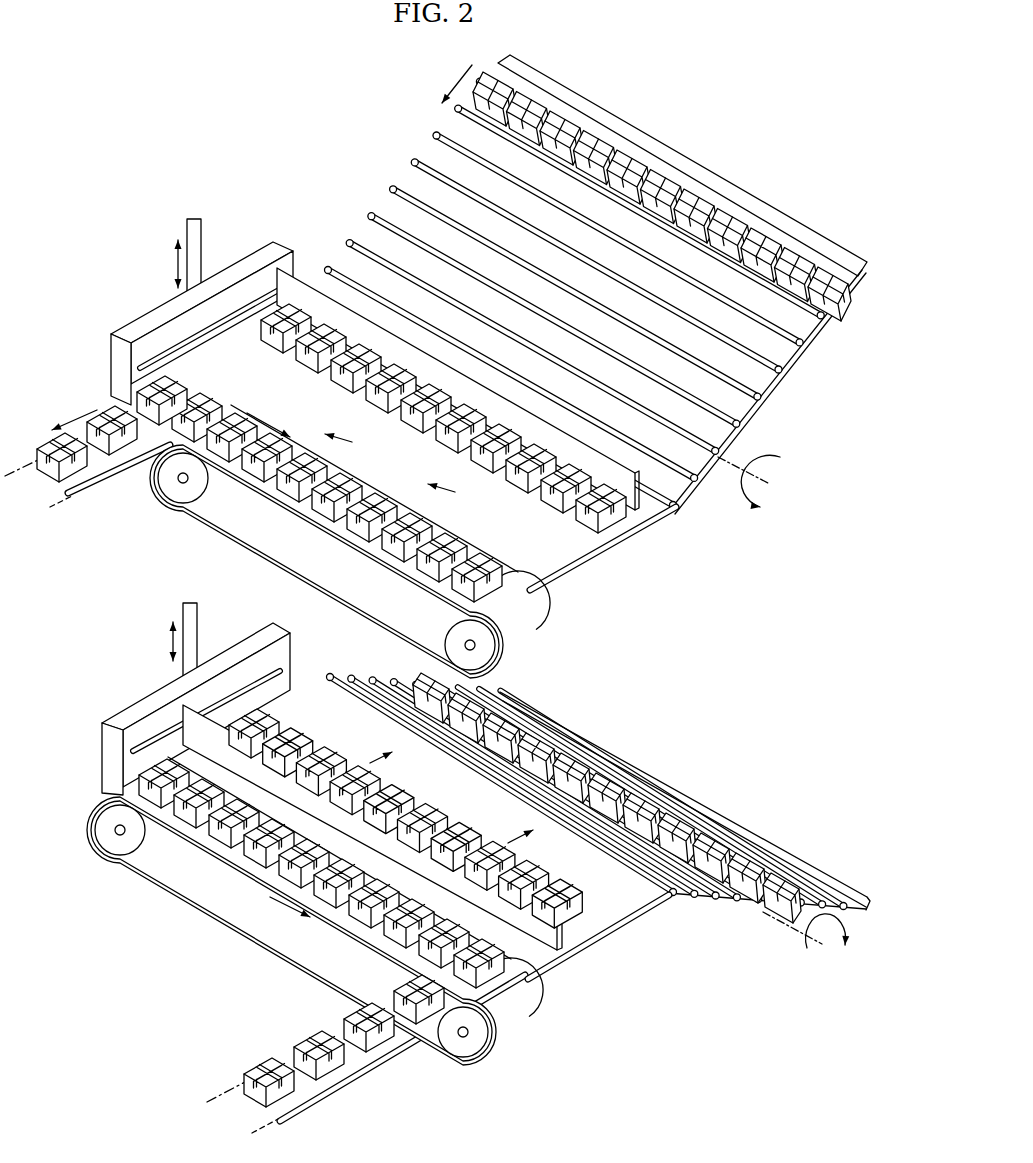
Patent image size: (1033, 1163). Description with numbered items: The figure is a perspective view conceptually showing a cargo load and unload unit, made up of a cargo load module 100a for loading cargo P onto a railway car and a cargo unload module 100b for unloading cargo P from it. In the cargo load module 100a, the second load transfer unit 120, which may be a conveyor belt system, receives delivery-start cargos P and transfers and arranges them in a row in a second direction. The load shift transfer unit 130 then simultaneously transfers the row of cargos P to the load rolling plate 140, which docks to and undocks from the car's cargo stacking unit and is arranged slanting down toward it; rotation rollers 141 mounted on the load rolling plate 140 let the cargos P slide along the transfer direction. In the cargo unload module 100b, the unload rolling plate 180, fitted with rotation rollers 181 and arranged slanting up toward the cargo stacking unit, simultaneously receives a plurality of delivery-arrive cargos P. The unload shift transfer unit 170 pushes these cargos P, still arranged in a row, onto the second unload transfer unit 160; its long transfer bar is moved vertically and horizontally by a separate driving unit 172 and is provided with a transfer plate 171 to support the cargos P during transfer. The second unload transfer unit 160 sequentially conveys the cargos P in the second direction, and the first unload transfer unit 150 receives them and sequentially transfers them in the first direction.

The cargo load module 100a is at (478, 847).
The cargo unload module 100b is at (586, 284).
The second load transfer unit 120 is at (515, 1020).
The load shift transfer unit 130 is at (543, 933).
The load rolling plate 140 is at (599, 826).
The rotation rollers 141 is at (728, 903).
The first unload transfer unit 150 is at (77, 492).
The second unload transfer unit 160 is at (527, 640).
The unload shift transfer unit 170 is at (300, 296).
The transfer plate 171 is at (555, 562).
The driving unit 172 is at (147, 320).
The unload rolling plate 180 is at (413, 176).
The rotation rollers 181 is at (415, 165).
The cargo P is at (100, 412).